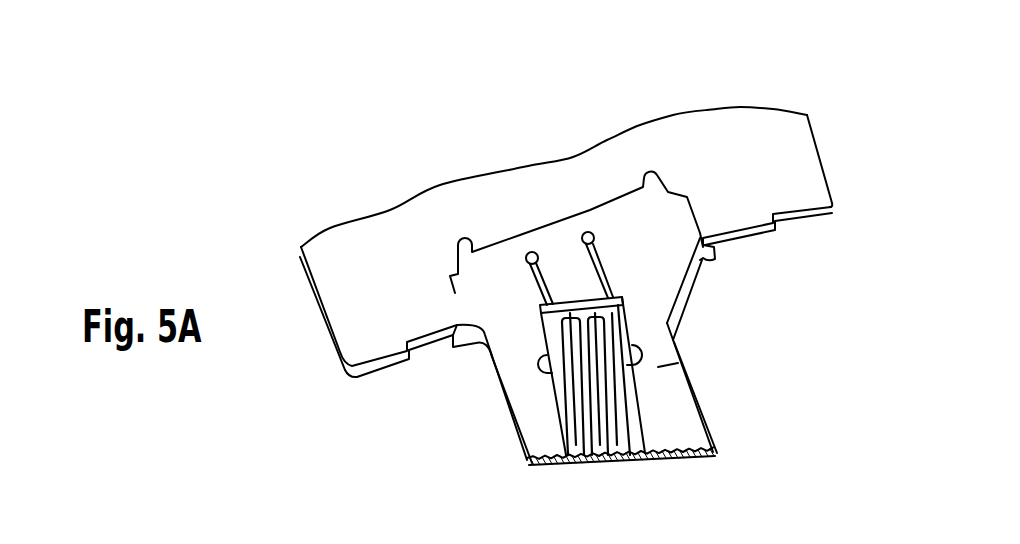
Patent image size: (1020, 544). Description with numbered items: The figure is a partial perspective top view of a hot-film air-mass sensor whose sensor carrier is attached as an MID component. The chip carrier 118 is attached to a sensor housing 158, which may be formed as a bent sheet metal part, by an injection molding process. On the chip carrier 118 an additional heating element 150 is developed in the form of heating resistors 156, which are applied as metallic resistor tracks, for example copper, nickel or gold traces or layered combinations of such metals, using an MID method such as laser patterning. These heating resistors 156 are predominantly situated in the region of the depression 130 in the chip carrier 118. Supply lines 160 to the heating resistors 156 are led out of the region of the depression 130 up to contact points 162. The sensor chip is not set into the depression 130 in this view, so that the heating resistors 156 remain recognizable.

The chip carrier 118 is at (502, 267).
The sensor housing 158 is at (743, 150).
The contact points 162 is at (584, 233).
The supply lines 160 is at (633, 277).
The additional heating element 150 is at (630, 385).
The heating resistors 156 is at (533, 407).
The depression 130 is at (560, 312).